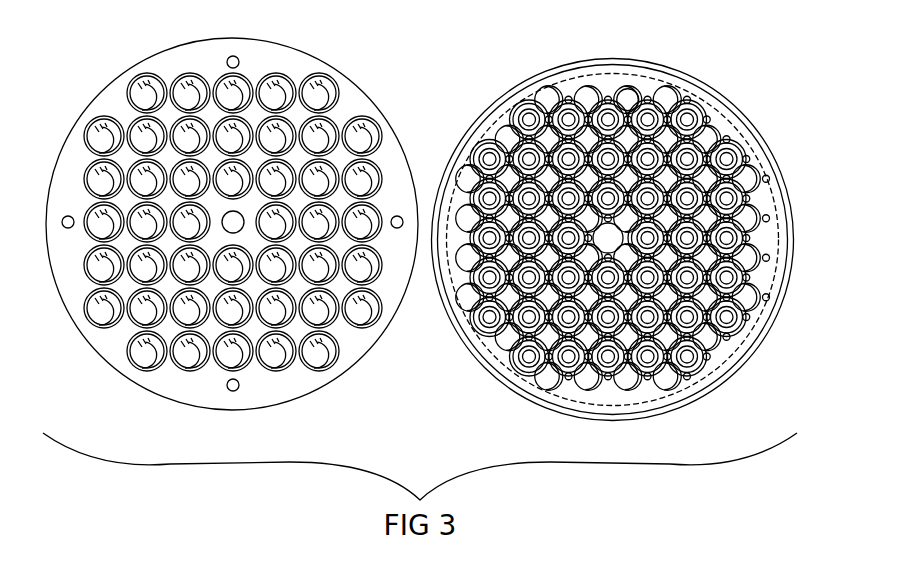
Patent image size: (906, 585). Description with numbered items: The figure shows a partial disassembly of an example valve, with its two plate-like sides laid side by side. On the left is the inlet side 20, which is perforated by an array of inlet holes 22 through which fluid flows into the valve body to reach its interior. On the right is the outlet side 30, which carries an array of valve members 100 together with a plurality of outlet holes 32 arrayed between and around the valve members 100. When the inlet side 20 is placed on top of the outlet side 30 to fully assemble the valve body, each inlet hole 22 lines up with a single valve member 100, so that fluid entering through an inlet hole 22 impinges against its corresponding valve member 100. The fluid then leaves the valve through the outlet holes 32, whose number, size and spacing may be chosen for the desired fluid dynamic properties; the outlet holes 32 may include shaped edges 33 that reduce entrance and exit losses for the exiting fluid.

The inlet side 20 is at (232, 244).
The inlet hole 22 is at (143, 360).
The outlet side 30 is at (598, 215).
The outlet hole 32 is at (628, 96).
The shaped edge 33 is at (582, 84).
The valve member 100 is at (728, 157).